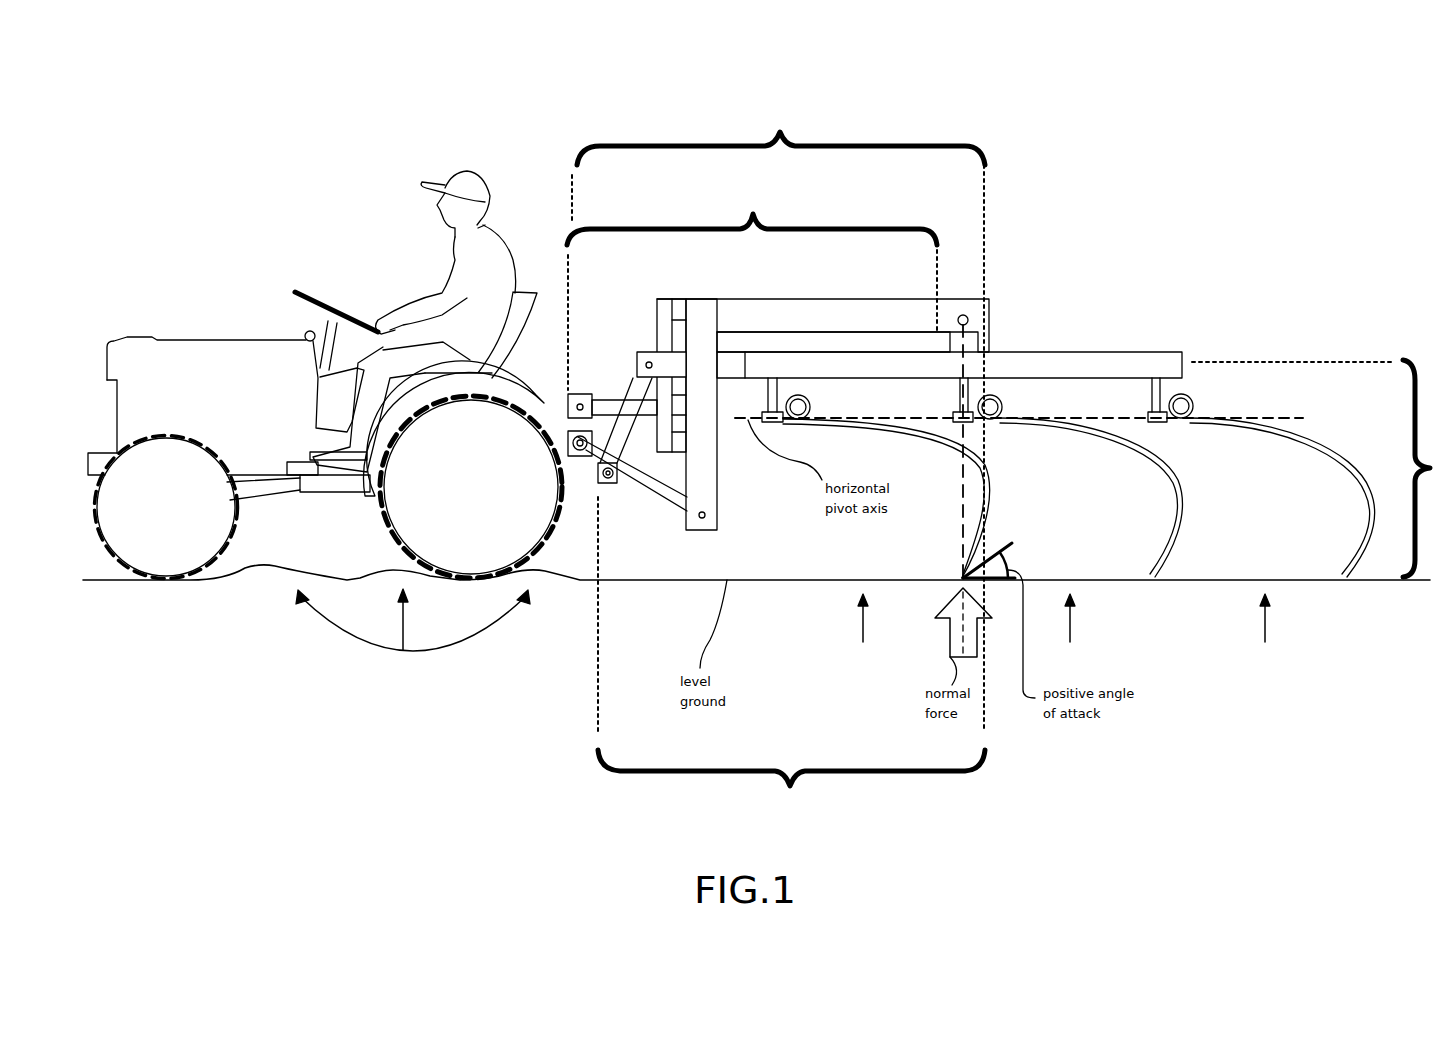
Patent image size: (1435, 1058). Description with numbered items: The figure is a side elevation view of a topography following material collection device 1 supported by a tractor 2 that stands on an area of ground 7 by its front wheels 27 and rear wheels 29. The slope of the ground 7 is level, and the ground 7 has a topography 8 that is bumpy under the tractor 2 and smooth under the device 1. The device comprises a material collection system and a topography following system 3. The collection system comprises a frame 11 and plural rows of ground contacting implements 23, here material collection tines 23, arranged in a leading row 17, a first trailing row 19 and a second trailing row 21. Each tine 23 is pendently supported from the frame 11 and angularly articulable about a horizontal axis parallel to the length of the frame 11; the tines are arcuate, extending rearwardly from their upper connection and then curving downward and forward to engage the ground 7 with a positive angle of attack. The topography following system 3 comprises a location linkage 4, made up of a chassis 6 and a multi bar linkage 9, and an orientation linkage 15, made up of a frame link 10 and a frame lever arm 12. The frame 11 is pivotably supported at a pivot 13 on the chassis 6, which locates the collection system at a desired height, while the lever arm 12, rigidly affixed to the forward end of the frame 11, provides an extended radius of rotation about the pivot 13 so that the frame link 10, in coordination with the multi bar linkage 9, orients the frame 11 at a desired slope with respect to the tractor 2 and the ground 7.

The topography following material collection device 1 is at (1104, 207).
The tractor 2 is at (228, 404).
The topography following system 3 is at (778, 413).
The location linkage 4 is at (752, 284).
The chassis 6 is at (788, 313).
The ground 7 is at (544, 676).
The topography 8 is at (413, 626).
The multi bar linkage 9 is at (608, 460).
The frame link 10 is at (625, 432).
The frame 11 is at (1063, 352).
The frame lever arm 12 is at (735, 368).
The pivot 13 is at (965, 316).
The orientation linkage 15 is at (791, 664).
The leading row 17 is at (863, 633).
The first trailing row 19 is at (1070, 633).
The second trailing row 21 is at (1265, 633).
The material collection tines 23 is at (1360, 477).
The front wheels of the tractor 27 is at (152, 520).
The rear wheels of the tractor 29 is at (464, 506).